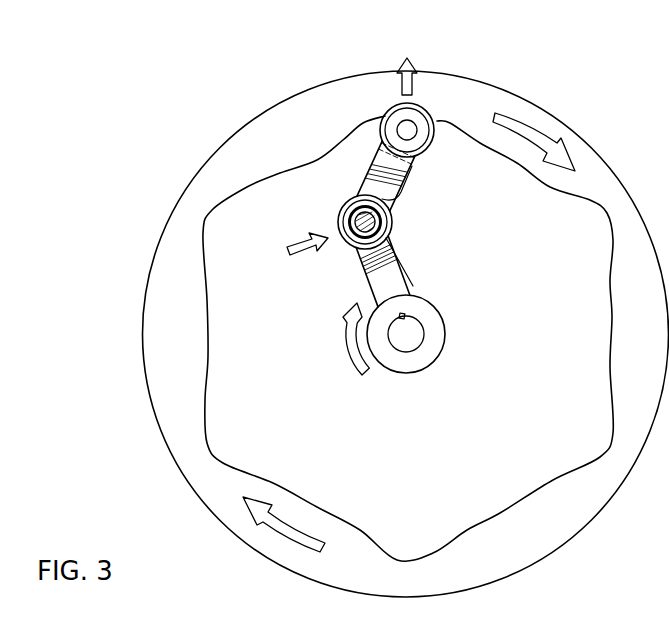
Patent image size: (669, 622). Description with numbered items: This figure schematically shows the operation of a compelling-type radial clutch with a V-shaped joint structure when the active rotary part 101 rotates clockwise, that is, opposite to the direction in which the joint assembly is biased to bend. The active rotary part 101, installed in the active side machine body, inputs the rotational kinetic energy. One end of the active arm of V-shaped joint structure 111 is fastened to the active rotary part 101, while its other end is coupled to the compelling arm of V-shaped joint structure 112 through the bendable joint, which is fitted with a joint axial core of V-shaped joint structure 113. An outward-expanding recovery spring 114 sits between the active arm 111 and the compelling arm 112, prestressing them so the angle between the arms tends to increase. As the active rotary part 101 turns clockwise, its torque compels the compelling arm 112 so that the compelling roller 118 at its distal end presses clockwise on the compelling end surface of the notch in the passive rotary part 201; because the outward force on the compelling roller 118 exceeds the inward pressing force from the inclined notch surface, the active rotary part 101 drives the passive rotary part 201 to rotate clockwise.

The passive rotary part 201 is at (253, 142).
The compelling roller 118 is at (440, 123).
The compelling arm of V-shaped joint structure 112 is at (375, 160).
The joint axial core of V-shaped joint structure 113 is at (385, 222).
The outward-expanding recovery spring 114 is at (405, 252).
The active arm of V-shaped joint structure 111 is at (402, 283).
The active rotary part 101 is at (415, 333).